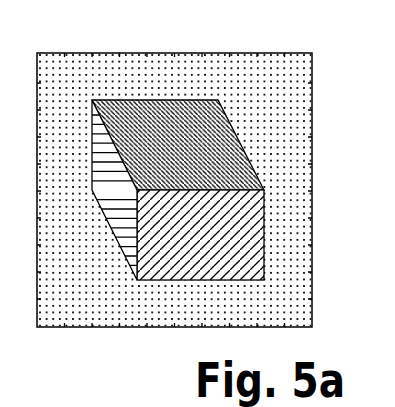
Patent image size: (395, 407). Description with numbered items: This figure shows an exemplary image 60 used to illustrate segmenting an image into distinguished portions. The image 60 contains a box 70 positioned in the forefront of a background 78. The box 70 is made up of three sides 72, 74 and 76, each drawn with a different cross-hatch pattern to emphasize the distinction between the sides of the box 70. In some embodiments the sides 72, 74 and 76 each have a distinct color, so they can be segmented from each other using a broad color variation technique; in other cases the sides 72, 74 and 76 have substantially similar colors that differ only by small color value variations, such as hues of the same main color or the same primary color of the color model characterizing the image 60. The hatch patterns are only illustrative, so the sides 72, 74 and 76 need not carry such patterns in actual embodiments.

The image 60 is at (287, 31).
The box 70 is at (199, 190).
The side 72 is at (208, 172).
The side 74 is at (248, 254).
The side 76 is at (129, 204).
The background 78 is at (100, 80).